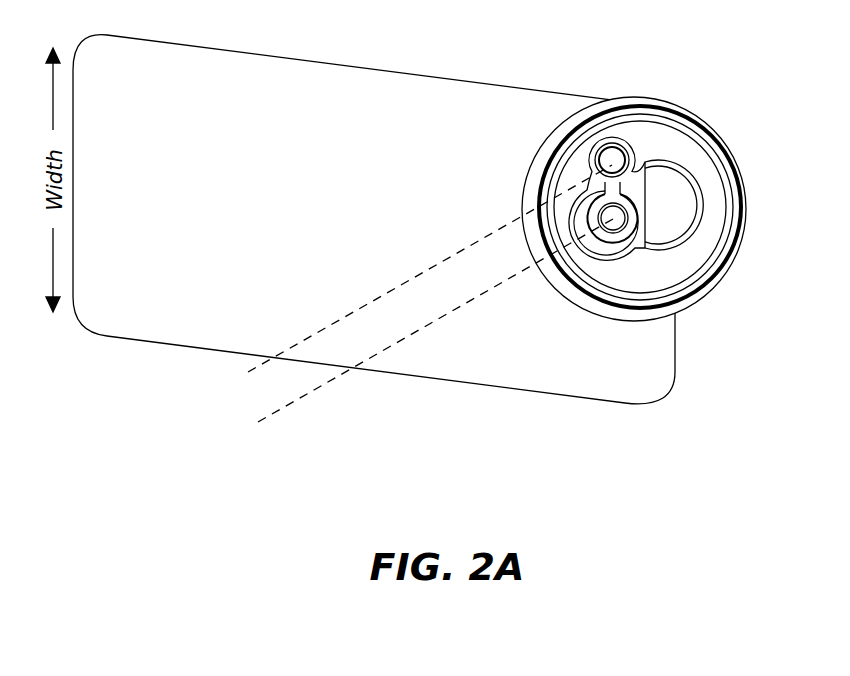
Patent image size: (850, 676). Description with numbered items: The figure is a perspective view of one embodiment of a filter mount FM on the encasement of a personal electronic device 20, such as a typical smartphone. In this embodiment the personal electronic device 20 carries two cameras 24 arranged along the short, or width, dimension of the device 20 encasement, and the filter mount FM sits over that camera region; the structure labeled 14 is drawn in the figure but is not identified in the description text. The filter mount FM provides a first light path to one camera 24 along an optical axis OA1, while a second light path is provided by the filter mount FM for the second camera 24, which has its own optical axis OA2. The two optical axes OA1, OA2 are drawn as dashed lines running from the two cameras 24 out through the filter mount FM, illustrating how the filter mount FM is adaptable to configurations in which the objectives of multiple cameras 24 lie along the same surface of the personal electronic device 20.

The camera module housing 14 is at (612, 158).
The personal electronic device 20 is at (157, 320).
The camera 24 is at (612, 158).
The filter mount FM is at (663, 101).
The optical axis OA1 is at (338, 322).
The optical axis OA2 is at (305, 395).